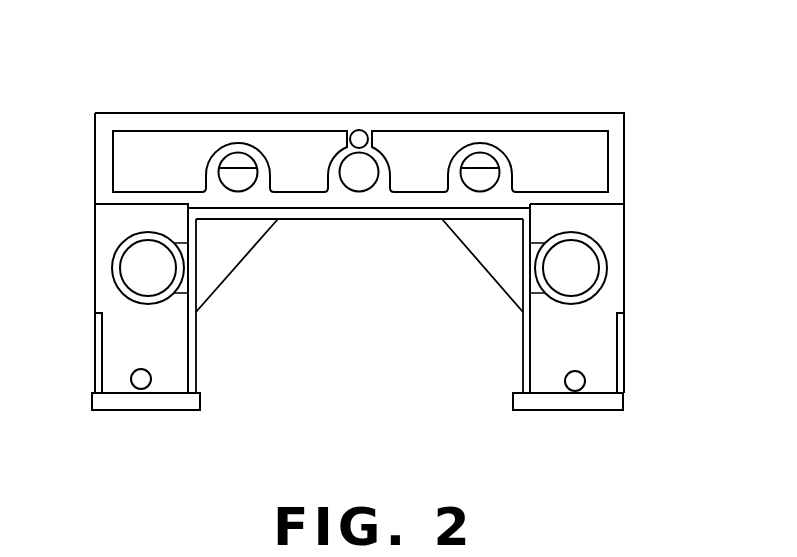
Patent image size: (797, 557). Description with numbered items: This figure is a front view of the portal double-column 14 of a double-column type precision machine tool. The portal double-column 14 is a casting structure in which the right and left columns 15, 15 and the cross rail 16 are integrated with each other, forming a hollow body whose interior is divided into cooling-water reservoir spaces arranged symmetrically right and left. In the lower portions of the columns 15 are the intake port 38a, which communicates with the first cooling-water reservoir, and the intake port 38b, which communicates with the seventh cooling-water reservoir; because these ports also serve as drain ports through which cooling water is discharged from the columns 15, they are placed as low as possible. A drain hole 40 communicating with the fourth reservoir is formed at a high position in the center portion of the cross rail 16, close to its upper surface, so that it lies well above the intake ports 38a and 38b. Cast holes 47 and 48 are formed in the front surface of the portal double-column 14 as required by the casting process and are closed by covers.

The portal double-column 14 is at (665, 72).
The cross rail 16 is at (278, 118).
The drain hole 40 is at (357, 130).
The cast hole 48 is at (368, 165).
The cast hole 47 is at (130, 258).
The column 15 is at (97, 298).
The intake port 38a is at (141, 389).
The intake port 38b is at (577, 391).